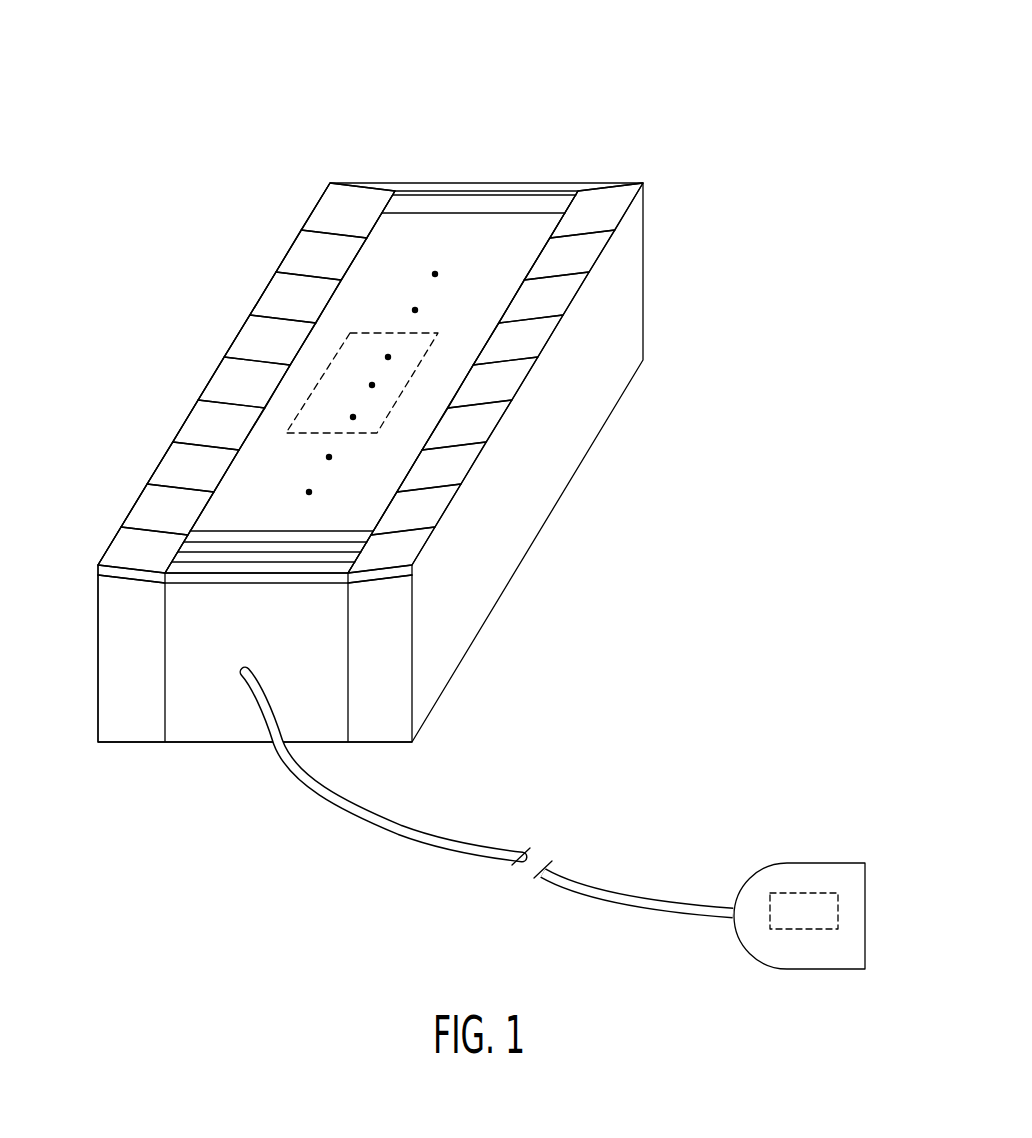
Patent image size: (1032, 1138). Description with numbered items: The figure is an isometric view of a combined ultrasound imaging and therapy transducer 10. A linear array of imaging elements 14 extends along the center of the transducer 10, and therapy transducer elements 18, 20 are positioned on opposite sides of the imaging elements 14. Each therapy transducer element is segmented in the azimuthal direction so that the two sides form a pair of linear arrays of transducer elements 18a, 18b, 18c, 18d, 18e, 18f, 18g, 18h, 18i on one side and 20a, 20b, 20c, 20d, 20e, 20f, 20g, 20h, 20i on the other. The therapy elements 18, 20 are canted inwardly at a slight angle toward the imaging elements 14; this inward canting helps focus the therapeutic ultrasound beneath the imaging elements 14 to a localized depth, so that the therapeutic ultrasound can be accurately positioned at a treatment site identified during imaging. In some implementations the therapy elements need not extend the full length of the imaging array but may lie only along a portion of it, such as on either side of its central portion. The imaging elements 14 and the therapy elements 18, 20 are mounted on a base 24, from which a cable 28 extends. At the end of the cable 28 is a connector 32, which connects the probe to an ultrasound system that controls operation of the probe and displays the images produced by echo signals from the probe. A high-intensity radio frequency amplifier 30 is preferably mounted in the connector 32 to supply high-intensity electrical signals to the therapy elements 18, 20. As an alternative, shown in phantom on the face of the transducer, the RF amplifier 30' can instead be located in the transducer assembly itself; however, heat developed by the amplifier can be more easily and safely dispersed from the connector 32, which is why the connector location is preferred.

The combined ultrasound imaging and therapy transducer 10 is at (612, 77).
The linear array of imaging elements 14 is at (463, 191).
The therapy transducer element 18 is at (352, 185).
The therapy transducer element segment 18a is at (322, 207).
The therapy transducer element segment 18b is at (293, 250).
The therapy transducer element segment 18c is at (280, 292).
The therapy transducer element segment 18d is at (240, 345).
The therapy transducer element segment 18e is at (218, 375).
The therapy transducer element segment 18f is at (198, 422).
The therapy transducer element segment 18g is at (177, 467).
The therapy transducer element segment 18h is at (148, 508).
The therapy transducer element segment 18i is at (140, 542).
The therapy transducer element 20 is at (612, 185).
The therapy transducer element segment 20a is at (610, 213).
The therapy transducer element segment 20b is at (593, 250).
The therapy transducer element segment 20c is at (563, 297).
The therapy transducer element segment 20d is at (533, 335).
The therapy transducer element segment 20e is at (512, 380).
The therapy transducer element segment 20f is at (485, 422).
The therapy transducer element segment 20g is at (467, 462).
The therapy transducer element segment 20h is at (442, 500).
The therapy transducer element segment 20i is at (418, 543).
The base 24 is at (268, 630).
The cable 28 is at (410, 832).
The high-intensity RF amplifier 30 is at (804, 858).
The RF amplifier 30' is at (285, 380).
The connector 32 is at (790, 957).